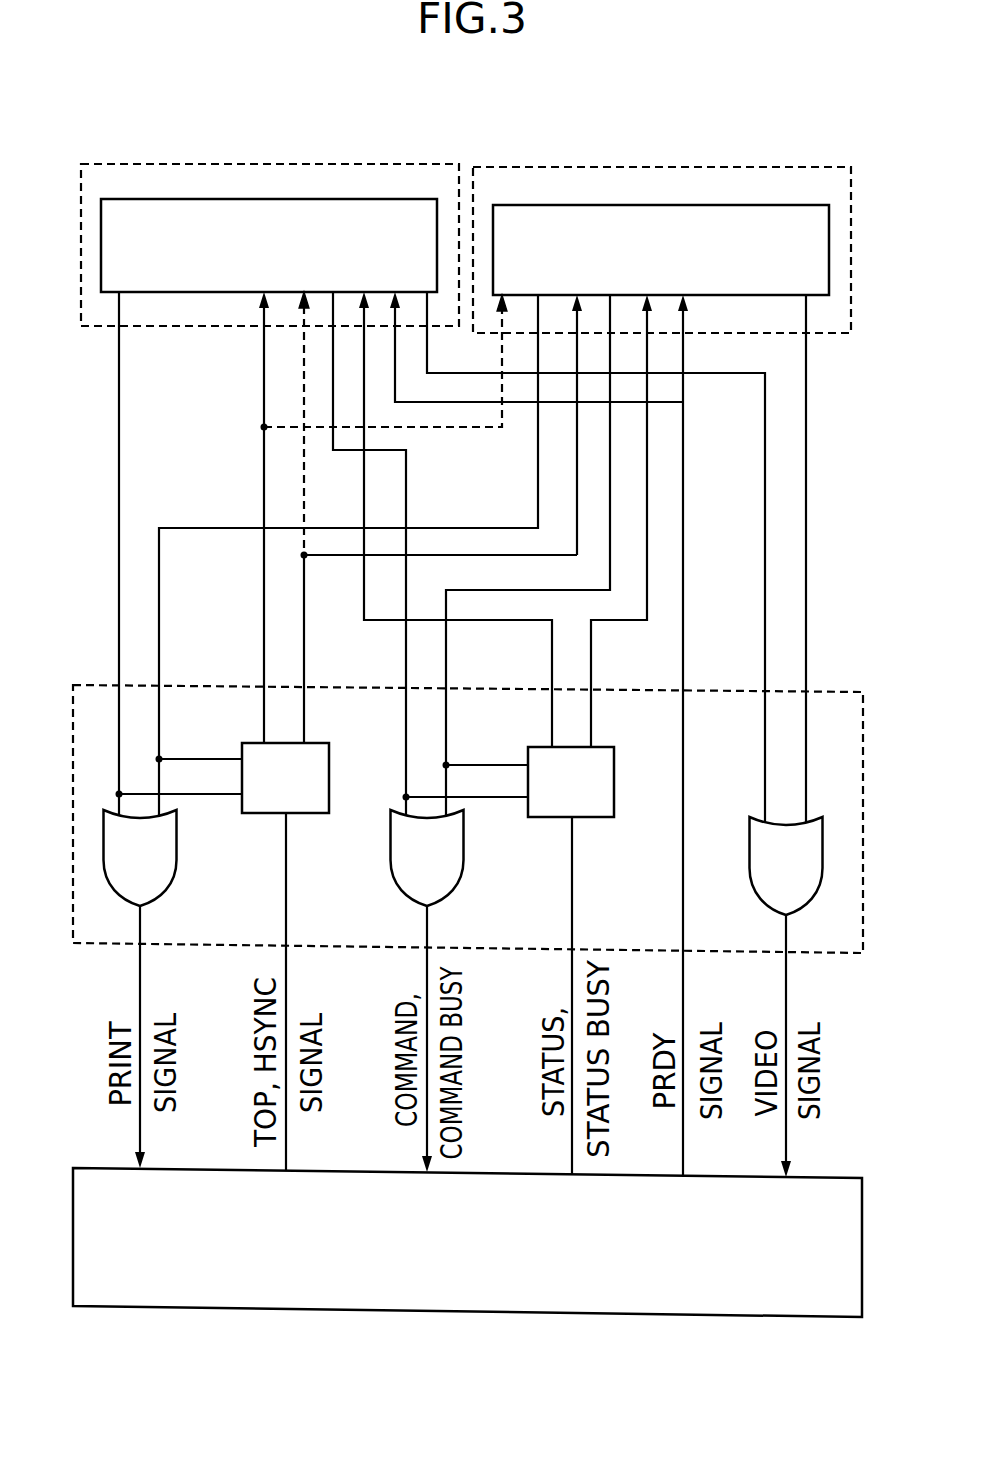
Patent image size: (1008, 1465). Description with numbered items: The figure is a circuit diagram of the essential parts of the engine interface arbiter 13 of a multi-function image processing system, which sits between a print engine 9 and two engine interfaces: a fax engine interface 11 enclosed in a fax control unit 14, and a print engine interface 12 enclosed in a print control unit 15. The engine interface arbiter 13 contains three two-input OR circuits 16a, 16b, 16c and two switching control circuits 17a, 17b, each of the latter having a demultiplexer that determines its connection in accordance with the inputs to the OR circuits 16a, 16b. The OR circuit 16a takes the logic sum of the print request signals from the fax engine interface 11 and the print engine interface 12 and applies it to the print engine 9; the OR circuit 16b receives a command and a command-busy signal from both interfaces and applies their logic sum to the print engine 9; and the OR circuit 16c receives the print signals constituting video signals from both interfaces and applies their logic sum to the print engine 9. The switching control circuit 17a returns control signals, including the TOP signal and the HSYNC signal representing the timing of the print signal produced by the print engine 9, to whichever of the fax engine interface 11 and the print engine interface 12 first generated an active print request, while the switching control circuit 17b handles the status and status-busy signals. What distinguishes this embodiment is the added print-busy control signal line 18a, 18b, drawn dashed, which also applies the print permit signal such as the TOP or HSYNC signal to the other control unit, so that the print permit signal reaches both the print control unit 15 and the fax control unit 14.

The print engine 9 is at (862, 1263).
The fax engine interface 11 is at (597, 205).
The print engine interface 12 is at (208, 199).
The engine interface arbiter 13 is at (838, 691).
The fax control unit 14 is at (727, 167).
The print control unit 15 is at (333, 164).
The OR circuit 16a is at (176, 862).
The OR circuit 16b is at (462, 862).
The OR circuit 16c is at (749, 870).
The switching control circuit 17a is at (305, 813).
The switching control circuit 17b is at (595, 817).
The print-busy control signal line 18a is at (303, 359).
The print-busy control signal line 18b is at (433, 428).